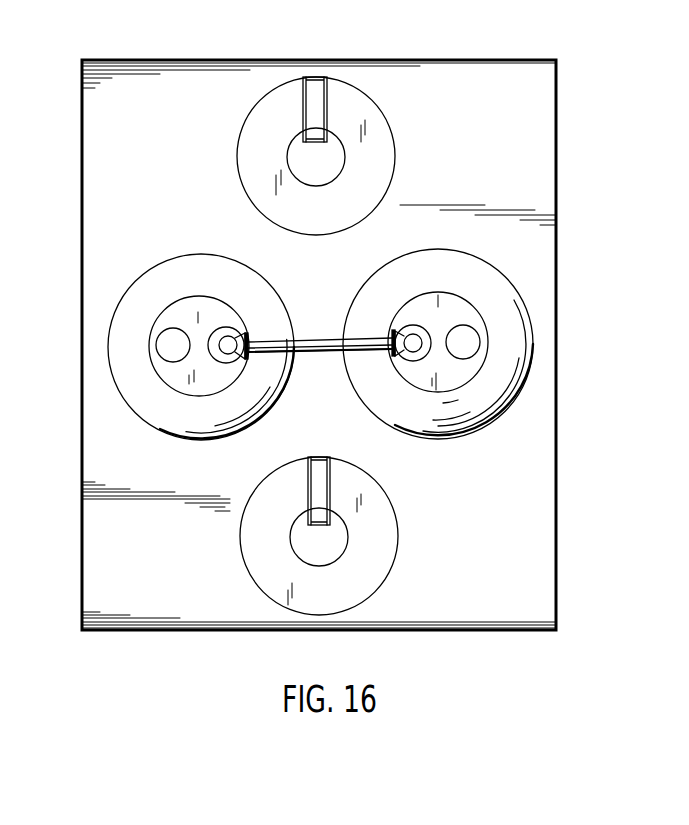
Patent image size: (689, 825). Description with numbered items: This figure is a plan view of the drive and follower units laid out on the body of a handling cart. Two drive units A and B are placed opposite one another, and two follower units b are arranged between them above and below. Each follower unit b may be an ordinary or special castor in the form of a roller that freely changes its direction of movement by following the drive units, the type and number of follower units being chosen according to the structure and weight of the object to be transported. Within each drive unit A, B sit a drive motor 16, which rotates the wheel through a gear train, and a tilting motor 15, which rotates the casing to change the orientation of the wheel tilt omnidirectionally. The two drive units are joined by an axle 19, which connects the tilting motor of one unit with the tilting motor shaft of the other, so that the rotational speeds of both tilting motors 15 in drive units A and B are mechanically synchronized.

The tilting motor 15 is at (232, 360).
The drive motor 16 is at (168, 356).
The axle 19 is at (313, 340).
The drive unit A is at (518, 310).
The drive unit B is at (125, 303).
The follower unit b is at (278, 100).